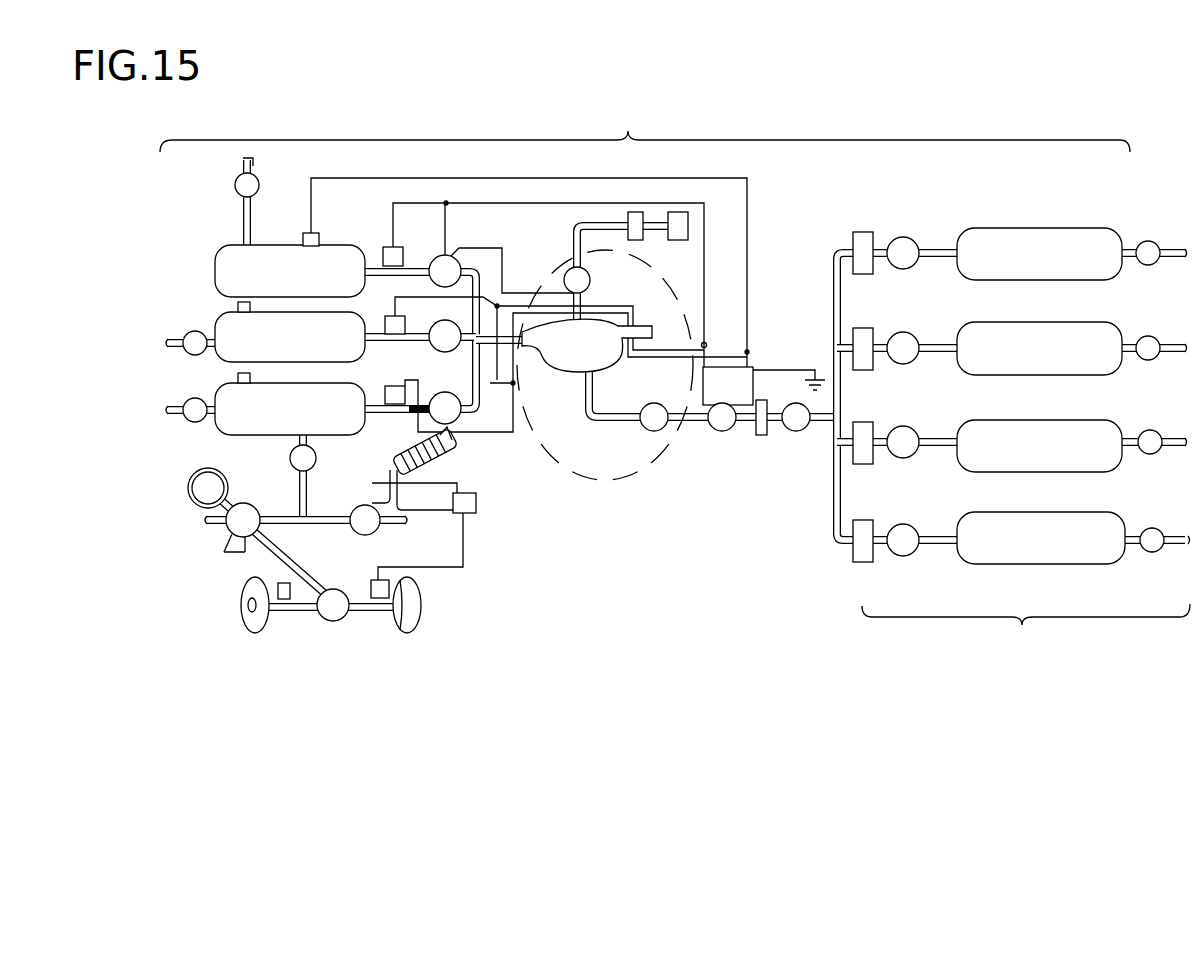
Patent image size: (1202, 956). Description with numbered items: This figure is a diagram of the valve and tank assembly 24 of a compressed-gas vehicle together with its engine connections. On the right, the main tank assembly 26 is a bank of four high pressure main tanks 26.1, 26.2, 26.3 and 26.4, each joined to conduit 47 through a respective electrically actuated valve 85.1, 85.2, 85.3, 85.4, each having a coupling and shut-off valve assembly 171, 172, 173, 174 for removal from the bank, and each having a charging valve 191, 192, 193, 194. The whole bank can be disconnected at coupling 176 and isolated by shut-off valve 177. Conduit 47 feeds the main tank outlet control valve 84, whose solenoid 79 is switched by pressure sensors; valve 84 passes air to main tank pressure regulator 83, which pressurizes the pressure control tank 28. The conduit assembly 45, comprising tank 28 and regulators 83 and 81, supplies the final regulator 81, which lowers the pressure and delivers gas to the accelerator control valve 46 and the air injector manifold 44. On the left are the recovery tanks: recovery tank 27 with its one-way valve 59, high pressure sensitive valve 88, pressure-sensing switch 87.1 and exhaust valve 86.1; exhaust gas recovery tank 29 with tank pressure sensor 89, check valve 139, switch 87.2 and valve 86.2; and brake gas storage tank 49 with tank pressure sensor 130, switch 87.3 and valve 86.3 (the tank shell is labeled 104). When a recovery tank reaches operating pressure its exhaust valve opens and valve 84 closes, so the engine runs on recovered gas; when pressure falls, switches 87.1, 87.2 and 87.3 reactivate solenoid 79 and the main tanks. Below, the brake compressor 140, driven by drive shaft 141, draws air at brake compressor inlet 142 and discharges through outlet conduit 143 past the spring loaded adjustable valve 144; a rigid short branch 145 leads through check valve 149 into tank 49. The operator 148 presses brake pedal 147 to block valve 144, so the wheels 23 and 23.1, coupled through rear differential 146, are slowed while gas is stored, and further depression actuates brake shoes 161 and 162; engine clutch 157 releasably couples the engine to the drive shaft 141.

The valve and tank assembly 24 is at (645, 130).
The one-way valve 59 is at (235, 186).
The high pressure sensitive valve 88 is at (309, 240).
The pressure-sensing switch 87.1 is at (385, 240).
The recovery tank exhaust valve 86.1 is at (445, 255).
The tank 104 is at (238, 262).
The recovery tank 27 is at (303, 283).
The final regulator 81 is at (563, 281).
The accelerator control valve 46 is at (634, 240).
The air injector manifold 44 is at (682, 240).
The pressure-sensing switch 87.2 is at (393, 318).
The recovery tank exhaust valve 86.2 is at (460, 324).
The tank pressure sensor 89 is at (250, 304).
The exhaust gas recovery tank 29 is at (332, 349).
The pressure-sensing switch 87.3 is at (394, 392).
The recovery tank exhaust valve 86.3 is at (452, 394).
The pressure control tank 28 is at (590, 366).
The tank pressure sensor 130 is at (250, 375).
The brake gas storage tank 49 is at (341, 424).
The solenoid 79 is at (742, 398).
The check valve 139 is at (190, 420).
The check valve 149 is at (289, 459).
The brake pedal 147 is at (392, 456).
The operator 148 is at (456, 464).
The main tank pressure regulator 83 is at (648, 431).
The main tank outlet control valve 84 is at (724, 431).
The coupling 176 is at (762, 436).
The shut-off valve 177 is at (796, 431).
The conduit assembly 45 is at (634, 488).
The engine clutch 157 is at (186, 490).
The rigid short branch 145 is at (308, 485).
The brake compressor inlet 142 is at (207, 517).
The brake compressor outlet conduit 143 is at (272, 522).
The spring loaded adjustable valve 144 is at (376, 531).
The brake compressor 140 is at (232, 541).
The drive shaft 141 is at (292, 552).
The brake shoe 161 is at (272, 568).
The brake shoe 162 is at (388, 575).
The rear wheel 23 is at (240, 618).
The rear wheel 23.1 is at (423, 612).
The rear differential gear and housing 146 is at (342, 615).
The coupling and shut-off valve assembly 171 is at (858, 250).
The electrically actuated valve 85.1 is at (935, 222).
The main tank 26.1 is at (1060, 264).
The charging valve 191 is at (1158, 245).
The coupling and shut-off valve assembly 172 is at (860, 342).
The electrically actuated valve 85.2 is at (935, 316).
The main tank 26.2 is at (1058, 360).
The charging valve 192 is at (1160, 340).
The coupling and shut-off valve assembly 173 is at (860, 434).
The electrically actuated valve 85.3 is at (936, 414).
The main tank 26.3 is at (1058, 454).
The charging valve 193 is at (1160, 436).
The coupling and shut-off valve assembly 174 is at (862, 532).
The electrically actuated valve 85.4 is at (937, 508).
The main tank 26.4 is at (1060, 549).
The charging valve 194 is at (1172, 512).
The conduit 47 is at (835, 540).
The main tank assembly 26 is at (1026, 629).